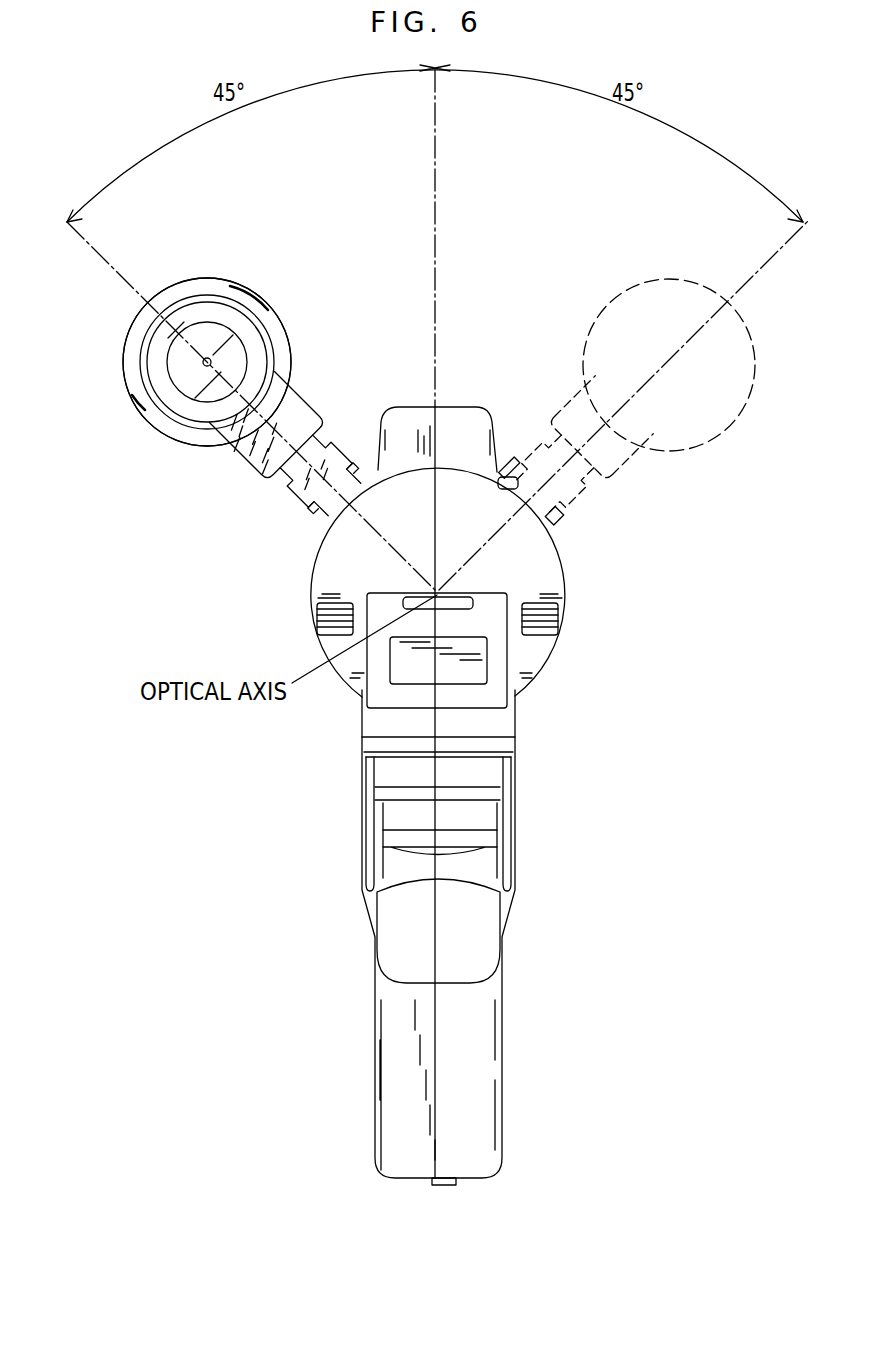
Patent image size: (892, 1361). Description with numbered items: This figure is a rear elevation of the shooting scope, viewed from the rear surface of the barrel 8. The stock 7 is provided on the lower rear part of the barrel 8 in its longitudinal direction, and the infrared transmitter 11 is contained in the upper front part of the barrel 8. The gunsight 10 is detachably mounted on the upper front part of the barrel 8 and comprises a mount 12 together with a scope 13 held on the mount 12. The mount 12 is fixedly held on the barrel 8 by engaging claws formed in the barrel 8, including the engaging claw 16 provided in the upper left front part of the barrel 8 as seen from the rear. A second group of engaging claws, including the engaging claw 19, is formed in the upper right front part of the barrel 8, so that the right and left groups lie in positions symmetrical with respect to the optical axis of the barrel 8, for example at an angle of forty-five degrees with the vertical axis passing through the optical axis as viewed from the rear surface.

The stock 7 is at (487, 1087).
The barrel 8 is at (535, 655).
The gunsight 10 is at (171, 276).
The infrared transmitter 11 is at (466, 405).
The mount 12 is at (310, 402).
The scope 13 is at (272, 310).
The engaging claw 16 is at (365, 478).
The engaging claw 19 is at (508, 472).